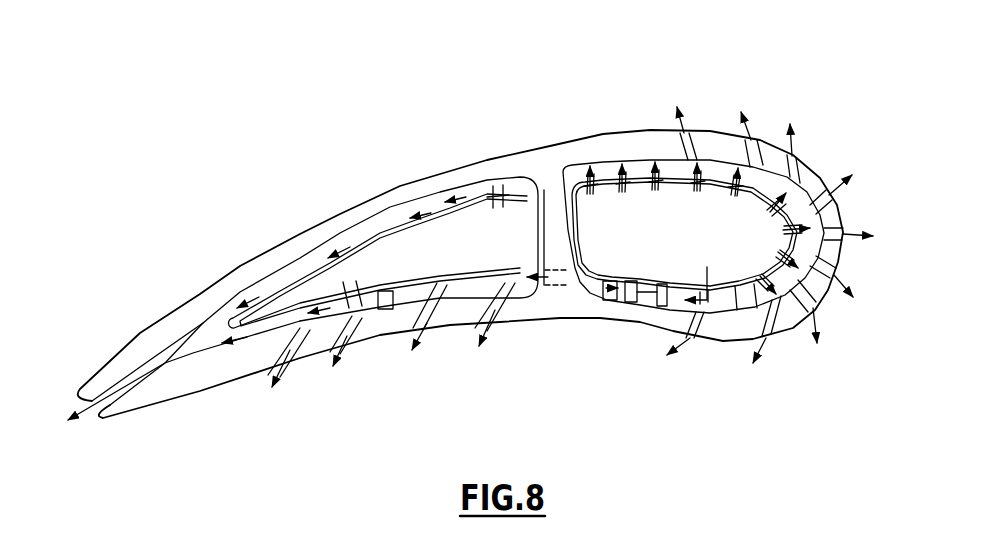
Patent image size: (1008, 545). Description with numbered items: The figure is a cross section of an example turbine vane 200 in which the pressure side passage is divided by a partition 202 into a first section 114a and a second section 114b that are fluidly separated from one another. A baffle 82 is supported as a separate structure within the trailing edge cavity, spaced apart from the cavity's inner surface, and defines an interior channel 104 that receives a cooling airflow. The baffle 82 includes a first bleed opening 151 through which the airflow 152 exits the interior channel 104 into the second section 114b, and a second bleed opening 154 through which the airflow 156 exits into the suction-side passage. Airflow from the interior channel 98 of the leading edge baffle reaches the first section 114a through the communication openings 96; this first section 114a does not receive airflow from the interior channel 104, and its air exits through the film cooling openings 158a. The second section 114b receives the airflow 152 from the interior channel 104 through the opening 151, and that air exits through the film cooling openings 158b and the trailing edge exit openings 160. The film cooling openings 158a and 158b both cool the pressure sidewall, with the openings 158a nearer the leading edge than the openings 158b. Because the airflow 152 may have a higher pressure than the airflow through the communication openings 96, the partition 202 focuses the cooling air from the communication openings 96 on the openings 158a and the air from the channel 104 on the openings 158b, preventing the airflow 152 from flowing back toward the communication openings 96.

The turbine vane 200 is at (820, 85).
The second bleed opening 154 is at (498, 212).
The first bleed opening 151 is at (342, 298).
The baffle 82 is at (277, 293).
The airflow 152 is at (345, 297).
The second interior channel 104 is at (470, 269).
The airflow 156 is at (498, 203).
The interior channel 98 is at (708, 244).
The communication openings 96 is at (567, 288).
The first section 114a is at (507, 290).
The second section 114b is at (273, 333).
The film cooling openings 158a is at (490, 318).
The film cooling openings 158b is at (297, 343).
The partition 202 is at (380, 302).
The trailing edge exit openings 160 is at (82, 430).